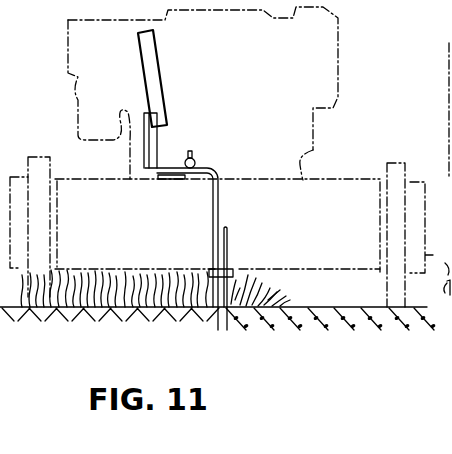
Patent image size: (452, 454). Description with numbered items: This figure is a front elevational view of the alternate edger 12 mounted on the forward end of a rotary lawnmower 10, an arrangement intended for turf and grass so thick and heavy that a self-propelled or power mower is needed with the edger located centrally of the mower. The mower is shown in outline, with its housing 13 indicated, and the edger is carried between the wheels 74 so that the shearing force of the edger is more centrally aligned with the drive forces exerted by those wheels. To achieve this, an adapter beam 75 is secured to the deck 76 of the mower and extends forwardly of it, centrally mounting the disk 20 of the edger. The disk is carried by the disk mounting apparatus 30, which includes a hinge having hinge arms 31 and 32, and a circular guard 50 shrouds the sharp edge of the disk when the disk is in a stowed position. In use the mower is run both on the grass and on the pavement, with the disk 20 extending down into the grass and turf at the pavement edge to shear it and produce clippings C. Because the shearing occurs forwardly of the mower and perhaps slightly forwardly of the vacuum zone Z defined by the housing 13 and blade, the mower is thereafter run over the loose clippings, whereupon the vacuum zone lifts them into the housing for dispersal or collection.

The lawnmower 10 is at (356, 60).
The alternate edger 12 is at (239, 232).
The housing 13 is at (360, 178).
The disk 20 is at (228, 247).
The disk mounting apparatus 30 is at (204, 125).
The hinge arm 31 is at (219, 172).
The hinge arm 32 is at (146, 164).
The circular guard 50 is at (165, 60).
The wheels 74 is at (50, 253).
The adapter beam 75 is at (167, 183).
The deck 76 is at (244, 179).
The vacuum zone Z is at (268, 275).
The clippings C is at (279, 283).